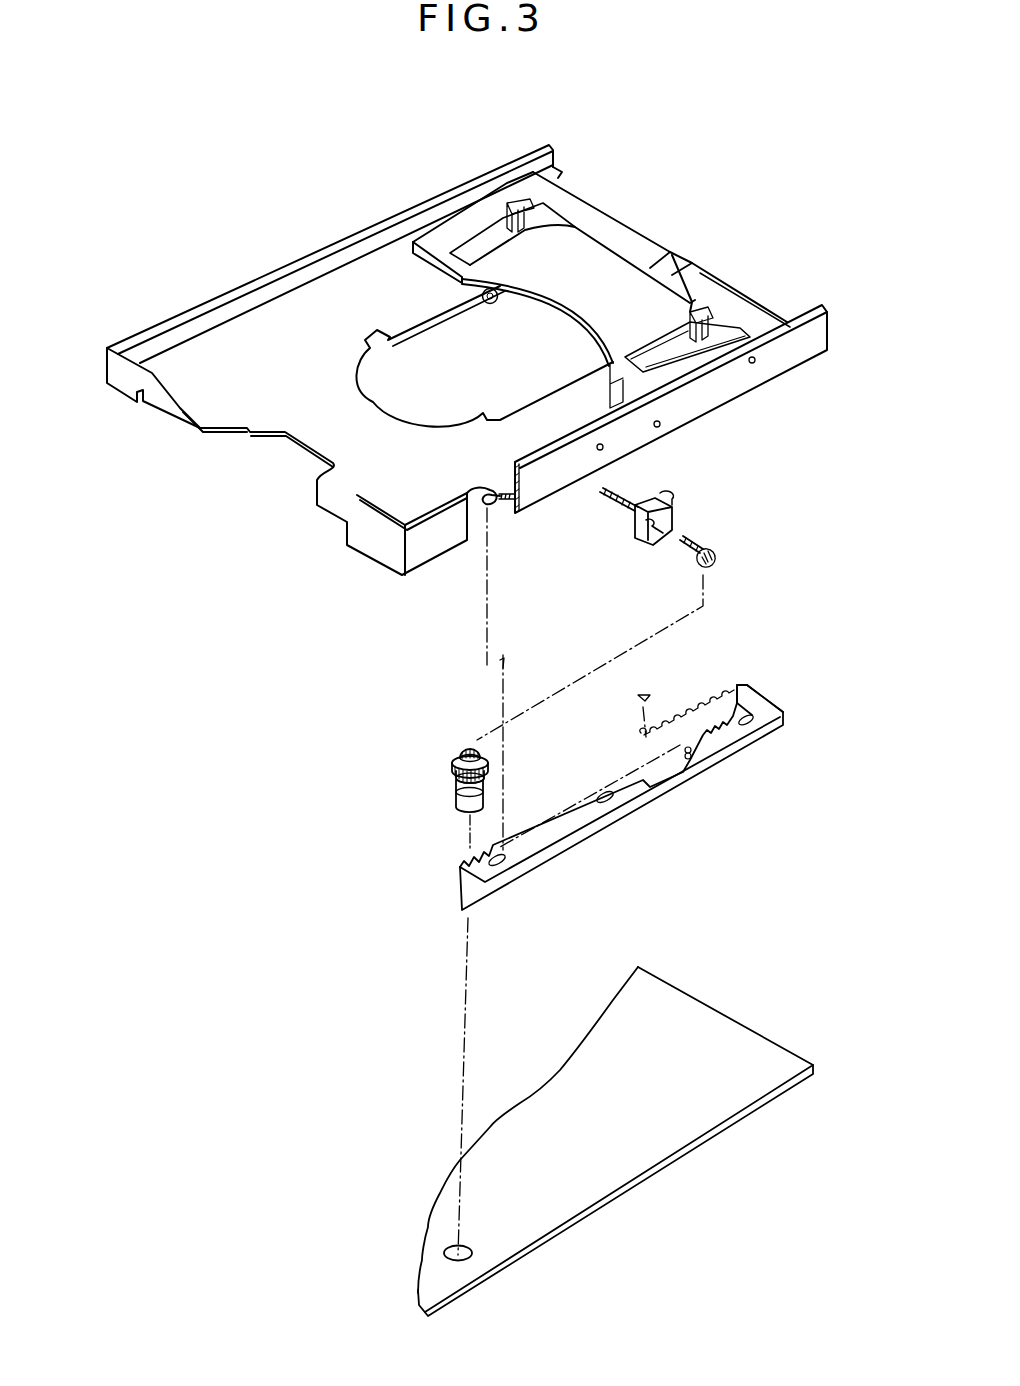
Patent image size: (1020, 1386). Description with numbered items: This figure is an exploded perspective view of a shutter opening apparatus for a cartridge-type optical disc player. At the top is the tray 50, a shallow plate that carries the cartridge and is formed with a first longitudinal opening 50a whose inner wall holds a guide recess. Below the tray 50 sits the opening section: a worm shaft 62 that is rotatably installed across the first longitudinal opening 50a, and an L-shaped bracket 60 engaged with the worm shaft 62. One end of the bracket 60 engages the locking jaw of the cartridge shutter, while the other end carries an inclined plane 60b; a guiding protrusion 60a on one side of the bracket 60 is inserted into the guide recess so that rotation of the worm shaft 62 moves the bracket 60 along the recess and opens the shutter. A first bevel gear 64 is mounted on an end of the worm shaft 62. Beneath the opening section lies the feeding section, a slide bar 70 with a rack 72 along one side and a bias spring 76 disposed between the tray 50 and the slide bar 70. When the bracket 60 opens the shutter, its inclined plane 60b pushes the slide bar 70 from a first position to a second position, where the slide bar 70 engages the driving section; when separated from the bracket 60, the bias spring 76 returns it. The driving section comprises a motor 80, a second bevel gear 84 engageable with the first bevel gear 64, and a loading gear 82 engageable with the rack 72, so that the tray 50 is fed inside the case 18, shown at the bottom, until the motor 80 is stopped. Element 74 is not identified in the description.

The case 18 is at (763, 1053).
The tray 50 is at (467, 360).
The first longitudinal opening 50a is at (354, 366).
The bracket 60 is at (719, 538).
The guiding protrusion 60a is at (668, 498).
The inclined plane 60b is at (677, 508).
The worm shaft 62 is at (623, 498).
The first bevel gear 64 is at (720, 558).
The slide bar 70 is at (575, 767).
The rack 72 is at (468, 850).
The tab 74 is at (737, 698).
The bias spring 76 is at (673, 712).
The motor 80 is at (457, 797).
The loading gear 82 is at (453, 760).
The second bevel gear 84 is at (465, 742).